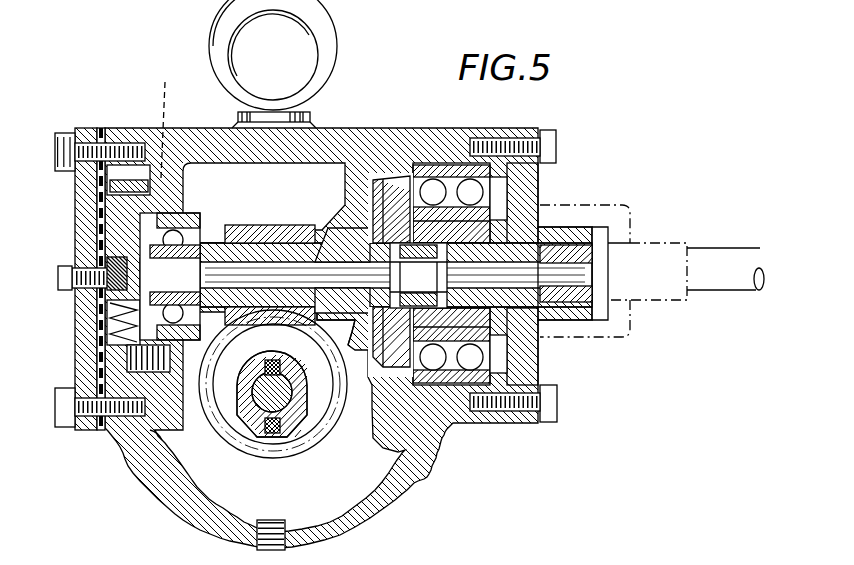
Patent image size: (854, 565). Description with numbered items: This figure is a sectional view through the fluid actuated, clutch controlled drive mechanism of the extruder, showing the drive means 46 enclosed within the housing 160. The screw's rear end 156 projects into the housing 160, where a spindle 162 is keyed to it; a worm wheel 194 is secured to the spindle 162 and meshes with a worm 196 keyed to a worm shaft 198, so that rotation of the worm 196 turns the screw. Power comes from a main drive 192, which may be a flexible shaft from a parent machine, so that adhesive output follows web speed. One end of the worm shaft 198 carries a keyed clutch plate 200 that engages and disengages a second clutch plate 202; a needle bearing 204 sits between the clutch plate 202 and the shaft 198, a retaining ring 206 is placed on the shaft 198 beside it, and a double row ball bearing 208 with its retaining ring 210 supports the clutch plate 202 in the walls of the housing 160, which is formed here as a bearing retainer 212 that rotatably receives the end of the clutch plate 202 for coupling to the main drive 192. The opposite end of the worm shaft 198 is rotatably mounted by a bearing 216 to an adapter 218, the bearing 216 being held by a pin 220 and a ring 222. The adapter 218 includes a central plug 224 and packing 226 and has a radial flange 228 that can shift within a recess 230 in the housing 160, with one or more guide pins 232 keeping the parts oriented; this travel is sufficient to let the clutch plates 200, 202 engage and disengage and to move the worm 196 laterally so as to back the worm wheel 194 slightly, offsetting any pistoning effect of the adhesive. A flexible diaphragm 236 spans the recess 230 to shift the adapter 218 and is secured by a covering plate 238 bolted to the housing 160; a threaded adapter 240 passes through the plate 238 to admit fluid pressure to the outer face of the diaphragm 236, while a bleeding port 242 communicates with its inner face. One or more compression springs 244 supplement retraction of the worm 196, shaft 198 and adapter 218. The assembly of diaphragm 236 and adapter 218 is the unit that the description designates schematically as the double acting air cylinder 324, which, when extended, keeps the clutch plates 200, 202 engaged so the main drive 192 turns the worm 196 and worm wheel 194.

The drive means 46 is at (350, 160).
The rear end of the screw 156 is at (262, 413).
The housing 160 is at (320, 128).
The spindle 162 is at (310, 392).
The main drive 192 is at (630, 237).
The worm wheel 194 is at (281, 460).
The worm 196 is at (272, 217).
The worm shaft 198 is at (221, 243).
The clutch plate 200 is at (330, 230).
The clutch plate 202 is at (405, 165).
The needle bearing 204 is at (369, 215).
The retaining ring 206 is at (363, 312).
The double row ball bearing 208 is at (458, 140).
The retaining ring 210 is at (512, 213).
The bearing retainer 212 is at (562, 228).
The bearing 216 is at (166, 305).
The adapter 218 is at (100, 222).
The pin 220 is at (186, 257).
The ring 222 is at (208, 210).
The central plug 224 is at (108, 315).
The packing 226 is at (112, 285).
The radial flange 228 is at (118, 150).
The recess 230 is at (140, 375).
The guide pin 232 is at (146, 178).
The flexible diaphragm 236 is at (100, 140).
The covering plate 238 is at (78, 428).
The threaded adapter 240 is at (62, 276).
The bleeding port 242 is at (166, 120).
The compression spring 244 is at (163, 436).
The double acting air cylinder 324 is at (82, 247).